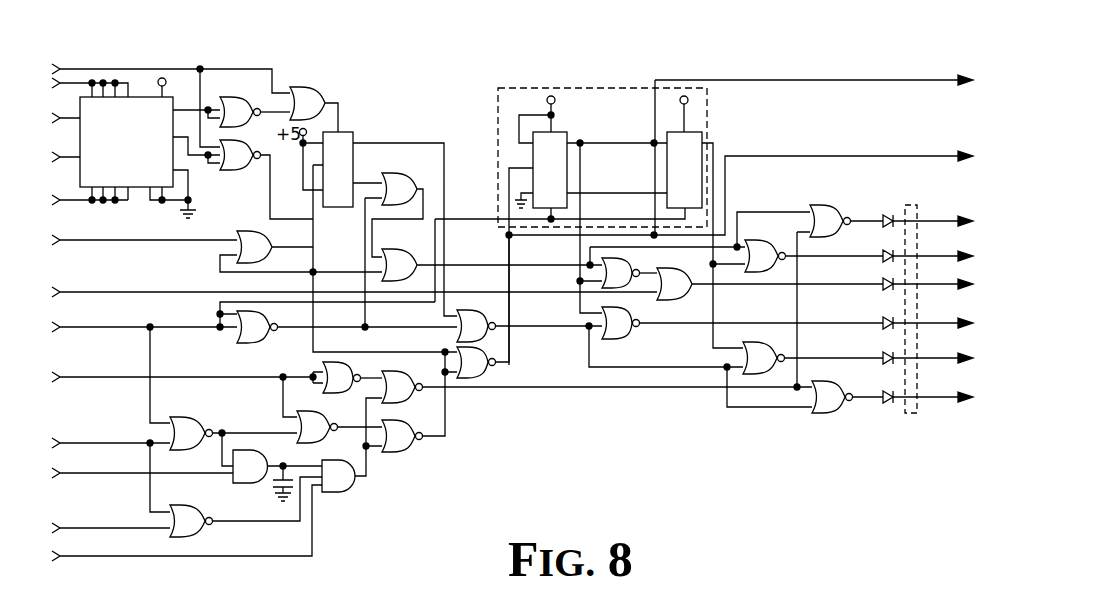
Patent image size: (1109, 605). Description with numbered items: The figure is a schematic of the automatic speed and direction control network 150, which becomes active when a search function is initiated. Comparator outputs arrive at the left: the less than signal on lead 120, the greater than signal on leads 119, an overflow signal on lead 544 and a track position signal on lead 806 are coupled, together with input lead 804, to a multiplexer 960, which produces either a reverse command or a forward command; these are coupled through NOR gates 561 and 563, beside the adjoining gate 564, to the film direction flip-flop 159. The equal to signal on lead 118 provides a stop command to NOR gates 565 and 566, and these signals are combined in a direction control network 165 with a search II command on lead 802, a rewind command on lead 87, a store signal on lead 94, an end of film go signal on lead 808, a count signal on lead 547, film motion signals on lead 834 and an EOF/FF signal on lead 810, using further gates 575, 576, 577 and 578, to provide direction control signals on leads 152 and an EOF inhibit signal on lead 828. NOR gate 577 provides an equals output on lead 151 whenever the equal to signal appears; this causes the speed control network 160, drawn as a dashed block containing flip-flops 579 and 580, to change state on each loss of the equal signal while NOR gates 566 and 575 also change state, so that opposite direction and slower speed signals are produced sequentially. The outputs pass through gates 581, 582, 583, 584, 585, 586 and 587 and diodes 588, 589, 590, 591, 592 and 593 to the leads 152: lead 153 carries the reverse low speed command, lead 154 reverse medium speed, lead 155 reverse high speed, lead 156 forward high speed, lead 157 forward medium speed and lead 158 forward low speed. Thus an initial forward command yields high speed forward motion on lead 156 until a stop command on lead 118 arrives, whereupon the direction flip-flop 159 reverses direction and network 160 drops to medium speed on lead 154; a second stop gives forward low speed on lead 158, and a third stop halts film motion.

The lead 120 is at (53, 80).
The input line 804 is at (76, 69).
The lead 544 is at (67, 106).
The lead 806 is at (67, 144).
The multiplexer 960 is at (138, 175).
The leads 119 is at (63, 203).
The NOR gate 561 is at (317, 88).
The NOR gate 563 is at (232, 171).
The film direction flip-flop 159 is at (350, 190).
The OR gate 564 is at (408, 247).
The lead 808 is at (78, 240).
The lead 87 is at (78, 291).
The lead 802 is at (78, 326).
The lead 118 is at (78, 377).
The NOR gate 565 is at (334, 393).
The NOR gate 566 is at (328, 440).
The lead 94 is at (78, 443).
The lead 547 is at (75, 474).
The lead 834 is at (75, 530).
The lead 810 is at (75, 558).
The NOR gate 576 is at (597, 387).
The NOR gate 575 is at (415, 400).
The NOR gate 578 is at (529, 326).
The NOR gate 577 is at (477, 306).
The lead 151 is at (906, 158).
The speed control network 160 is at (626, 80).
The flip-flop 579 is at (565, 190).
The flip-flop 580 is at (699, 190).
The lead 828 is at (920, 79).
The automatic speed and direction control network 150 is at (768, 74).
The leads 152 is at (916, 204).
The NOR gate 585 is at (821, 205).
The NOR gate 584 is at (770, 238).
The diode 588 is at (882, 212).
The lead 153 is at (933, 213).
The diode 589 is at (883, 255).
The lead 154 is at (933, 249).
The diode 590 is at (883, 285).
The lead 155 is at (933, 279).
The diode 591 is at (883, 323).
The lead 156 is at (933, 317).
The diode 592 is at (883, 358).
The lead 157 is at (933, 351).
The diode 593 is at (883, 396).
The lead 158 is at (933, 390).
The NOR gate 581 is at (619, 267).
The OR gate 583 is at (690, 264).
The NOR gate 582 is at (626, 334).
The NOR gate 586 is at (752, 346).
The NOR gate 587 is at (840, 413).
The direction control network 165 is at (468, 418).